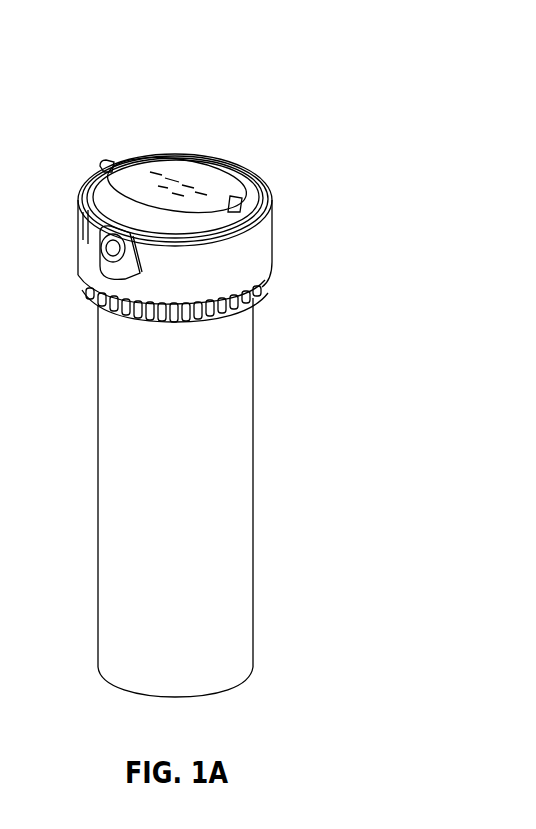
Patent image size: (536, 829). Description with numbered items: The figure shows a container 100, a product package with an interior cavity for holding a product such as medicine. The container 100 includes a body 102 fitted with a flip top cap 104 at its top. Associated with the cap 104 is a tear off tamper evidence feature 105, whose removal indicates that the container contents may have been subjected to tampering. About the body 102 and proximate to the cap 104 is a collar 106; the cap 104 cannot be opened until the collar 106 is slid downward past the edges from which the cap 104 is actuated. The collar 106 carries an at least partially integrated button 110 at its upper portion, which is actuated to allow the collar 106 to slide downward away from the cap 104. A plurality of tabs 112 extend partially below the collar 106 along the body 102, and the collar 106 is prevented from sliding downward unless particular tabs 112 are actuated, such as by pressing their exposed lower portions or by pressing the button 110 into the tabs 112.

The container 100 is at (500, 34).
The body 102 is at (235, 505).
The flip top cap 104 is at (260, 177).
The tear off tamper evidence feature 105 is at (180, 152).
The collar 106 is at (262, 244).
The button 110 is at (100, 259).
The tabs 112 is at (230, 322).